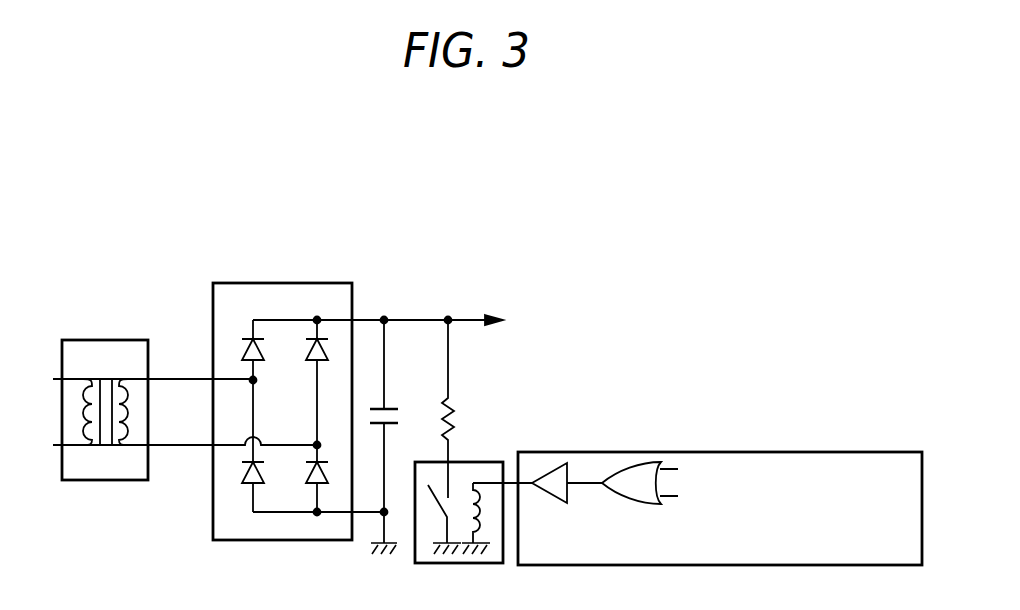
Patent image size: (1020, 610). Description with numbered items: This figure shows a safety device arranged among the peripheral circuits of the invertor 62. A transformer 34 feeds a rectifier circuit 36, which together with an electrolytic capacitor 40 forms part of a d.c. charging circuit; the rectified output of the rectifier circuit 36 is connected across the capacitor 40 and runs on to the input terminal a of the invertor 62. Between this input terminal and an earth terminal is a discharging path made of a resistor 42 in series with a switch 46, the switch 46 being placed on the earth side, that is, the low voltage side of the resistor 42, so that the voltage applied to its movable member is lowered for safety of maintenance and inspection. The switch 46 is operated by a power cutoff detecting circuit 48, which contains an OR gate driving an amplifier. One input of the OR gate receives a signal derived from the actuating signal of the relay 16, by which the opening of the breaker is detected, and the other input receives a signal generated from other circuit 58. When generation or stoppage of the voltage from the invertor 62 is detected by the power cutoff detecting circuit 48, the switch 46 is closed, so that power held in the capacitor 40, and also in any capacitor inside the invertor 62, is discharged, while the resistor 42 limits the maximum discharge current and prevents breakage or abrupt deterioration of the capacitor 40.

The transformer 34 is at (137, 340).
The rectifier circuit 36 is at (345, 283).
The electrolytic capacitor 40 is at (392, 402).
The resistor 42 is at (460, 405).
The switch 46 is at (500, 462).
The power cutoff detecting circuit 48 is at (720, 484).
The relay 16 is at (738, 472).
The other circuit 58 is at (700, 549).
The invertor 62 is at (641, 339).